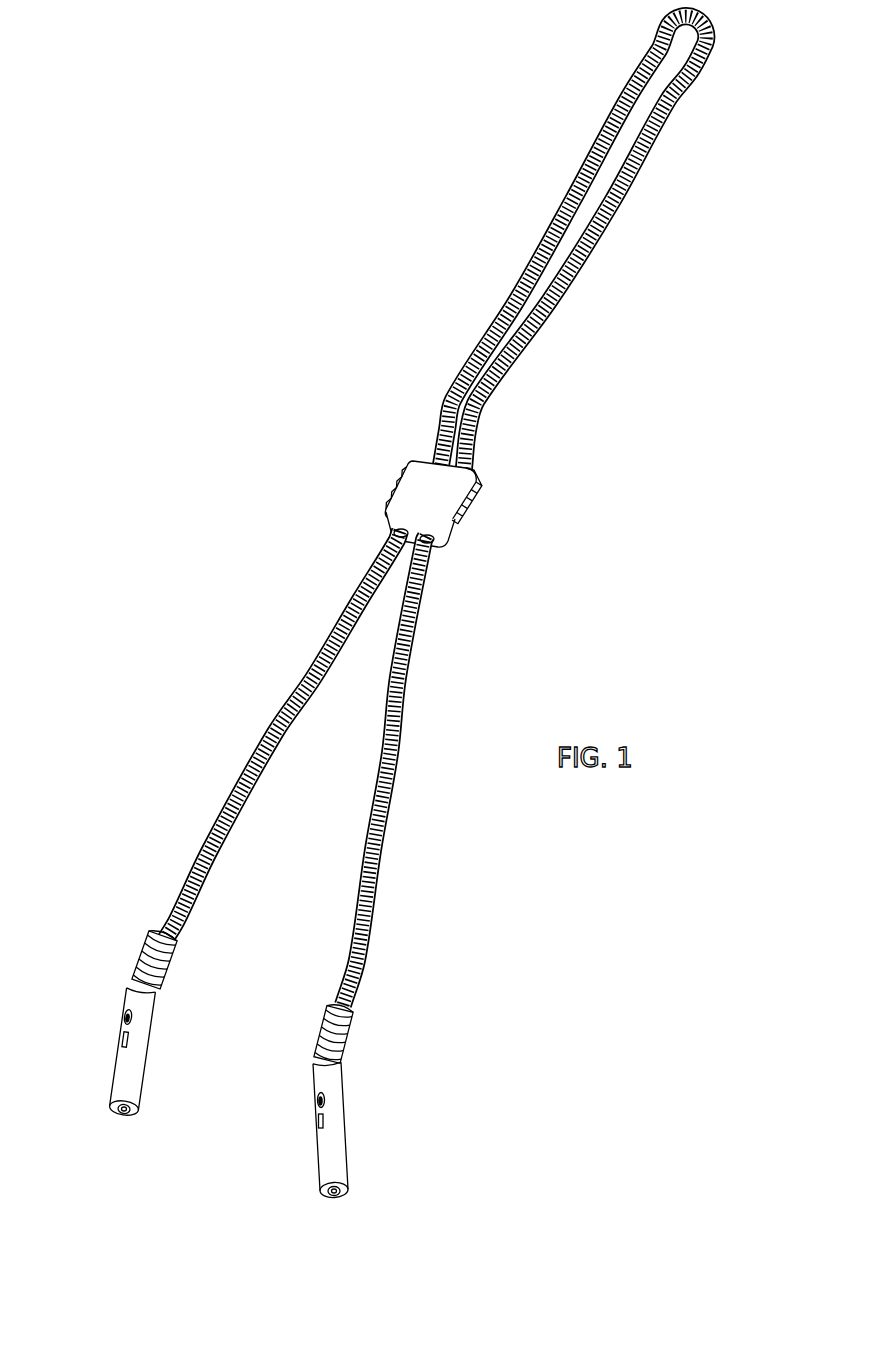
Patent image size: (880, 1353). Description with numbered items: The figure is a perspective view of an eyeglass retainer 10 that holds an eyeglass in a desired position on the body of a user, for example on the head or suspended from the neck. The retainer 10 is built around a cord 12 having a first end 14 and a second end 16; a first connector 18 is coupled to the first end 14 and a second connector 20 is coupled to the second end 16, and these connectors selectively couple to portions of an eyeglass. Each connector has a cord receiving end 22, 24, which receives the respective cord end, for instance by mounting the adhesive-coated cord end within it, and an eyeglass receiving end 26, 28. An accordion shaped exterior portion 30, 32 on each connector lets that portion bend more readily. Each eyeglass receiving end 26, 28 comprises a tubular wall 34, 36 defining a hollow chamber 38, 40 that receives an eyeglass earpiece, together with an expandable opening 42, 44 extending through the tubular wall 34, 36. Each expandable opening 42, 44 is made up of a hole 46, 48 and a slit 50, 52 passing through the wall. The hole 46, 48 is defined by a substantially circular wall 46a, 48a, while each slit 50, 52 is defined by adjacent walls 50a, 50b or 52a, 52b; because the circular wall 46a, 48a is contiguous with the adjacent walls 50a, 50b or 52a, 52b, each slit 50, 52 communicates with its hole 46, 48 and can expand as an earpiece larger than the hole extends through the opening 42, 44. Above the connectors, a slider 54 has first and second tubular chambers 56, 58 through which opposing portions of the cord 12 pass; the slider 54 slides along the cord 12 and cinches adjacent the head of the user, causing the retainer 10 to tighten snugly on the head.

The eyeglass retainer 10 is at (303, 252).
The cord 12 is at (268, 733).
The first end 14 is at (176, 920).
The second end 16 is at (357, 990).
The first connector 18 is at (103, 997).
The second connector 20 is at (376, 1102).
The cord receiving end 22 is at (180, 948).
The cord receiving end 24 is at (348, 1018).
The eyeglass receiving end 26 is at (125, 1069).
The eyeglass receiving end 28 is at (324, 1123).
The accordian shaped exterior portion 30 is at (160, 936).
The accordian shaped exterior portion 32 is at (376, 1033).
The tubular wall 34 is at (140, 1110).
The tubular wall 36 is at (348, 1187).
The hollow chamber 38 is at (120, 1117).
The hollow chamber 40 is at (340, 1198).
The expandable opening 42 is at (68, 1006).
The expandable opening 44 is at (262, 1085).
The hole 46 is at (122, 1014).
The substantially circular wall 46a is at (134, 1012).
The hole 48 is at (315, 1100).
The substantially circular wall 48a is at (310, 1090).
The slit 50 is at (122, 1037).
The adjacent wall 50a is at (122, 1047).
The adjacent wall 50b is at (134, 1040).
The slit 52 is at (315, 1120).
The adjacent wall 52a is at (313, 1127).
The adjacent wall 52b is at (325, 1122).
The slider 54 is at (435, 497).
The first tubular chamber 56 is at (432, 546).
The second tubular chamber 58 is at (388, 530).